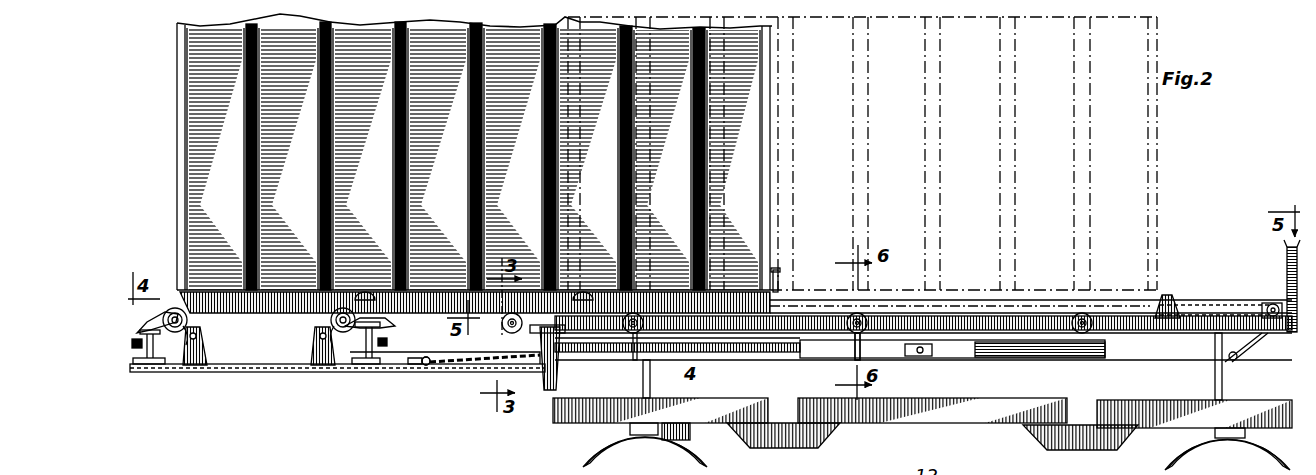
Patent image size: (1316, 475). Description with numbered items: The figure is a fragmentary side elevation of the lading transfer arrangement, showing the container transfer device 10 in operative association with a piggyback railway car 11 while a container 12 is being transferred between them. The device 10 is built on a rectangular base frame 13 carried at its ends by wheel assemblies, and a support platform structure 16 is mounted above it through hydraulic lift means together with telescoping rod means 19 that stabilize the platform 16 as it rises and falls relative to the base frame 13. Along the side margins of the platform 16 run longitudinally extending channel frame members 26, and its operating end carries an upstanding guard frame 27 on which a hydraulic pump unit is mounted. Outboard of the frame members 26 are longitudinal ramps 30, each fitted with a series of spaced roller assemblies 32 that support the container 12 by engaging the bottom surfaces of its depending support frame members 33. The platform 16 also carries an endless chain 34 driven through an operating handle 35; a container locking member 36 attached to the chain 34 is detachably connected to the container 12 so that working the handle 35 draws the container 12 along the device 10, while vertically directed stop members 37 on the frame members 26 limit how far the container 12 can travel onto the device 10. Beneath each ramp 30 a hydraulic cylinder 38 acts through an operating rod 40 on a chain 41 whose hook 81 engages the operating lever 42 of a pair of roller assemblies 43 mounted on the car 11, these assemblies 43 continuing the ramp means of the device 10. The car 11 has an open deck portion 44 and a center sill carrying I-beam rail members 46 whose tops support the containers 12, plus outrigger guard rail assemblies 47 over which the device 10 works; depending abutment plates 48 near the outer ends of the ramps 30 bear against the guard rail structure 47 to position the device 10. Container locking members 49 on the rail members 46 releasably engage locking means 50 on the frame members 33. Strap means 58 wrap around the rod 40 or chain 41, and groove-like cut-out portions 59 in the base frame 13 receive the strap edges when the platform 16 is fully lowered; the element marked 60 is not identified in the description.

The container transfer device 10 is at (1178, 217).
The piggyback railway car 11 is at (167, 262).
The container 12 is at (178, 78).
The base frame 13 is at (893, 428).
The support platform structure 16 is at (1120, 334).
The telescoping rod means 19 is at (650, 384).
The channel frame members 26 is at (1157, 334).
The upstanding guard frame 27 is at (1285, 266).
The ramps 30 is at (893, 362).
The roller assemblies 32 is at (508, 326).
The depending support frame members 33 is at (232, 313).
The endless chain 34 is at (1212, 305).
The operating handle 35 is at (1248, 340).
The container locking member 36 is at (781, 276).
The stop members 37 is at (1163, 295).
The hydraulic cylinder 38 is at (1037, 362).
The operating rod 40 is at (733, 362).
The chain 41 is at (458, 362).
The operating lever 42 is at (395, 368).
The roller assemblies 43 is at (190, 322).
The open deck portion 44 is at (205, 372).
The rail members 46 is at (163, 365).
The outrigger guard rail assemblies 47 is at (427, 366).
The depending abutment plates 48 is at (548, 390).
The container locking members 49 is at (160, 313).
The locking means 50 is at (368, 296).
The strap means 58 is at (633, 362).
The groove-like cut-out portions 59 is at (780, 382).
The side bearing 60 is at (830, 435).
The hook 81 is at (430, 352).